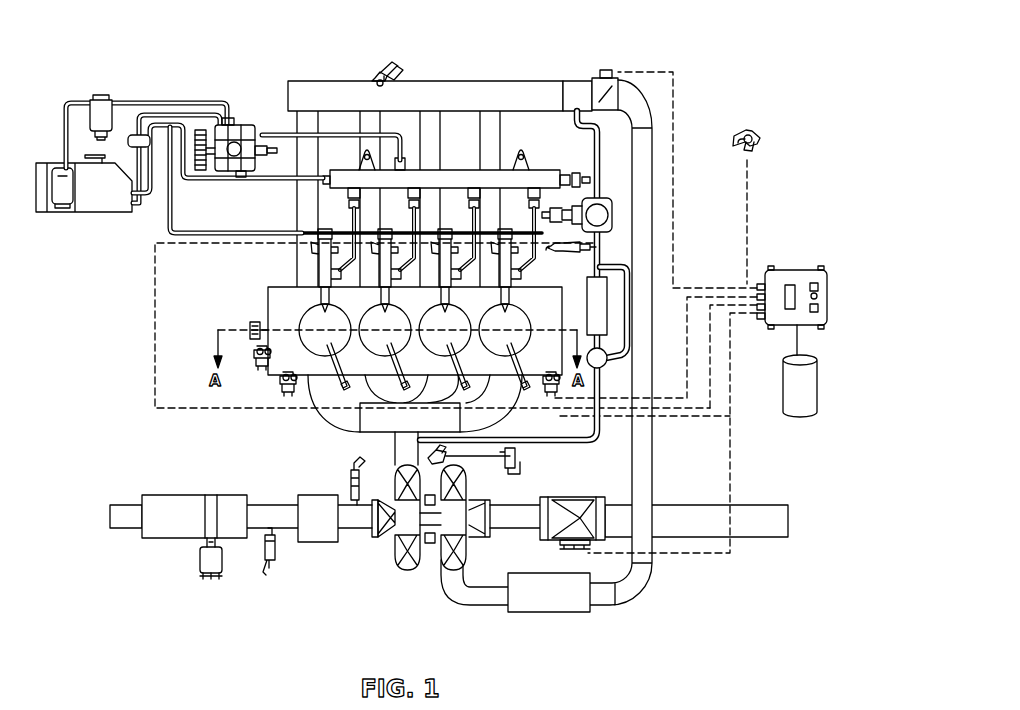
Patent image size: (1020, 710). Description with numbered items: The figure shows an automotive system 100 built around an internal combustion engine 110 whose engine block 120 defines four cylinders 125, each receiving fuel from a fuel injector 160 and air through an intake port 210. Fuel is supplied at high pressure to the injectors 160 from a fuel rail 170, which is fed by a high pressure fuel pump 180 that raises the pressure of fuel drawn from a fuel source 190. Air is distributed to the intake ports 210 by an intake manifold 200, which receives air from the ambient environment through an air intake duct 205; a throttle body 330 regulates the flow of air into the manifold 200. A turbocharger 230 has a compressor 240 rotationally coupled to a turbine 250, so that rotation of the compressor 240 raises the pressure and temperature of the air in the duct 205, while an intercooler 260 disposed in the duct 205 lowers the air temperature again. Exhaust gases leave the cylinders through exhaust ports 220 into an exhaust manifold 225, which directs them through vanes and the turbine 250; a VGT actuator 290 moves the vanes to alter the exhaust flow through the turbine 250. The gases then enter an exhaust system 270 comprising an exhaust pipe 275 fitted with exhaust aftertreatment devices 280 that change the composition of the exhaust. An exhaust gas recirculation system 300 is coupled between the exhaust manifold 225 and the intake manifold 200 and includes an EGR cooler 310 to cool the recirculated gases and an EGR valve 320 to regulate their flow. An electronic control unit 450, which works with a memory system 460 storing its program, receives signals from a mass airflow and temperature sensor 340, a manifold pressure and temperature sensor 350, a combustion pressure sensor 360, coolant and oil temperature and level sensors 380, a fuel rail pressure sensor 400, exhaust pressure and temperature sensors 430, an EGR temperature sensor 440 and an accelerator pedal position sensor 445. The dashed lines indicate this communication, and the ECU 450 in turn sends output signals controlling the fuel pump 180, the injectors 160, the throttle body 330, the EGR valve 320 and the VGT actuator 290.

The automotive system 100 is at (210, 72).
The internal combustion engine 110 is at (513, 72).
The engine block 120 is at (267, 293).
The cylinder 125 is at (522, 317).
The fuel injector 160 is at (325, 272).
The fuel rail 170 is at (333, 184).
The high pressure fuel pump 180 is at (247, 122).
The fuel source 190 is at (103, 200).
The intake manifold 200 is at (432, 98).
The air intake duct 205 is at (758, 522).
The intake port 210 is at (300, 291).
The exhaust port 220 is at (312, 378).
The exhaust manifold 225 is at (337, 481).
The turbocharger 230 is at (426, 547).
The compressor 240 is at (457, 547).
The turbine 250 is at (405, 540).
The intercooler 260 is at (570, 600).
The exhaust system 270 is at (175, 482).
The exhaust pipe 275 is at (122, 518).
The exhaust aftertreatment device 280 is at (165, 518).
The VGT actuator 290 is at (450, 458).
The exhaust gas recirculation system 300 is at (567, 445).
The EGR cooler 310 is at (597, 320).
The EGR valve 320 is at (600, 198).
The throttle body 330 is at (606, 68).
The mass airflow and temperature sensor 340 is at (570, 542).
The manifold pressure and temperature sensor 350 is at (378, 68).
The combustion pressure sensor 360 is at (383, 424).
The coolant and oil temperature and level sensors 380 is at (283, 380).
The fuel rail pressure sensor 400 is at (600, 150).
The exhaust pressure and temperature sensors 430 is at (270, 567).
The EGR temperature sensor 440 is at (598, 242).
The accelerator pedal position sensor 445 is at (753, 132).
The electronic control unit 450 is at (797, 270).
The memory system 460 is at (798, 402).